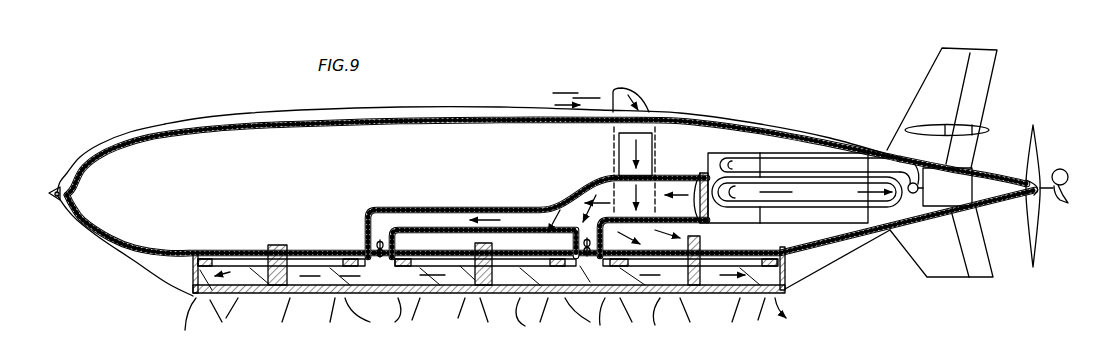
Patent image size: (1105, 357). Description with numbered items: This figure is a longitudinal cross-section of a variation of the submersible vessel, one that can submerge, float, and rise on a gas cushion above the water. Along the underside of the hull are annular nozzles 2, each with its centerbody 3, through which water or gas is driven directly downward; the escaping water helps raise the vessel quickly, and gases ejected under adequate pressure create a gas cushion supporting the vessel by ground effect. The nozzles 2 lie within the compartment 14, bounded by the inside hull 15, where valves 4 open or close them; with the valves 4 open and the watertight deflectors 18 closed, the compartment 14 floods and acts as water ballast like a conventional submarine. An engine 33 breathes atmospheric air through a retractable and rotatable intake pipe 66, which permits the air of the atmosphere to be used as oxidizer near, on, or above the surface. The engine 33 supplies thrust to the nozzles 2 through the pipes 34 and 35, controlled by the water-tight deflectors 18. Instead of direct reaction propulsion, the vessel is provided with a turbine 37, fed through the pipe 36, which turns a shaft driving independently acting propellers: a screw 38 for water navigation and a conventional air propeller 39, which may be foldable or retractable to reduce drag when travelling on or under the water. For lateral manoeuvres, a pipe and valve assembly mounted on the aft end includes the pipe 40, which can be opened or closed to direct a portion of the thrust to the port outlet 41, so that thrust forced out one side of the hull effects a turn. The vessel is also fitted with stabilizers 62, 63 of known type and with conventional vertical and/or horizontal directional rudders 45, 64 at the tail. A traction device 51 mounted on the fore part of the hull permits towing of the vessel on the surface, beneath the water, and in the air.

The annular nozzle 2 is at (485, 303).
The centerbody 3 is at (283, 294).
The valve 4 is at (213, 250).
The compartment 14 is at (188, 281).
The inside hull 15 is at (185, 253).
The watertight deflector 18 is at (375, 247).
The engine 33 is at (742, 158).
The pipe 34 is at (452, 207).
The pipe 35 is at (583, 232).
The pipe 36 is at (833, 194).
The turbine 37 is at (962, 193).
The screw 38 is at (1066, 176).
The air propeller 39 is at (1036, 153).
The pipe 40 is at (832, 163).
The port outlet 41 is at (925, 187).
The directional rudder 45 is at (982, 90).
The traction device 51 is at (55, 199).
The stabilizer 62 is at (945, 63).
The stabilizer 63 is at (938, 130).
The directional rudder 64 is at (972, 130).
The intake pipe 66 is at (637, 99).